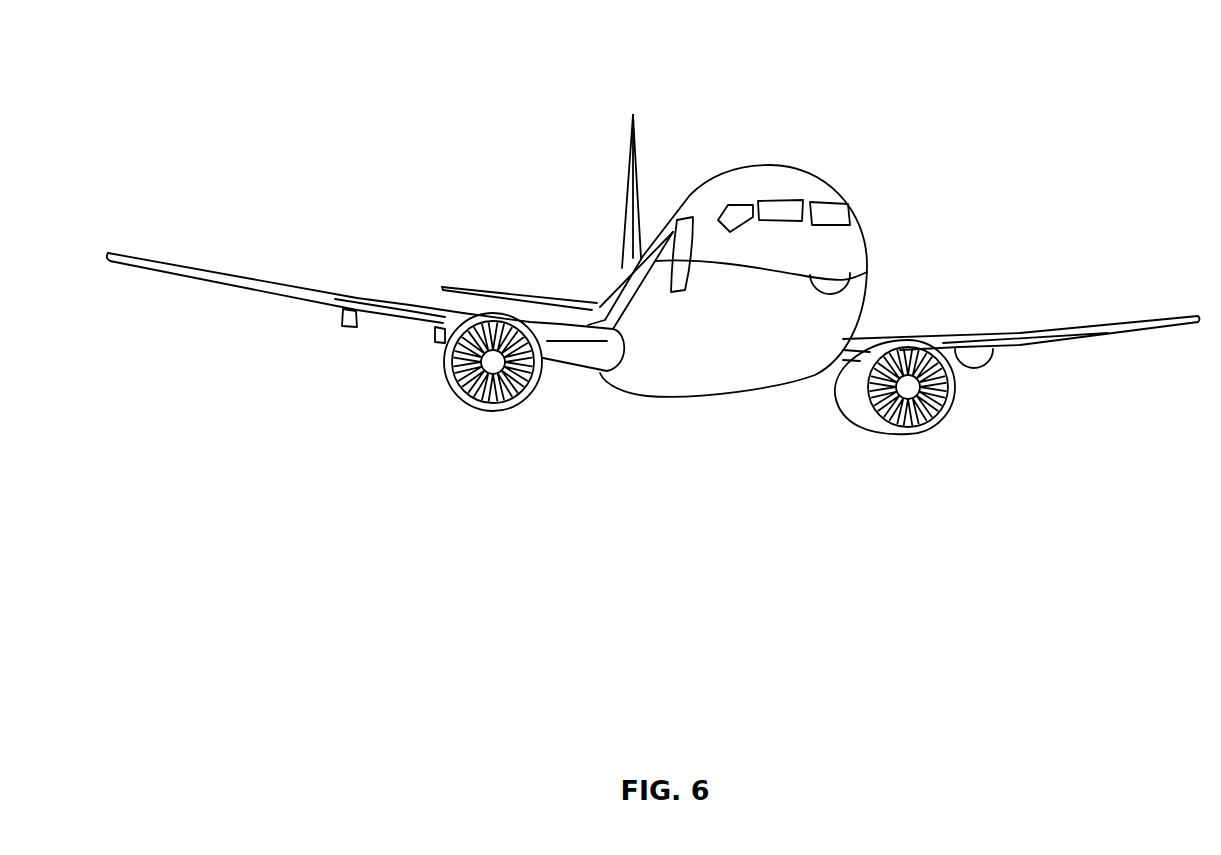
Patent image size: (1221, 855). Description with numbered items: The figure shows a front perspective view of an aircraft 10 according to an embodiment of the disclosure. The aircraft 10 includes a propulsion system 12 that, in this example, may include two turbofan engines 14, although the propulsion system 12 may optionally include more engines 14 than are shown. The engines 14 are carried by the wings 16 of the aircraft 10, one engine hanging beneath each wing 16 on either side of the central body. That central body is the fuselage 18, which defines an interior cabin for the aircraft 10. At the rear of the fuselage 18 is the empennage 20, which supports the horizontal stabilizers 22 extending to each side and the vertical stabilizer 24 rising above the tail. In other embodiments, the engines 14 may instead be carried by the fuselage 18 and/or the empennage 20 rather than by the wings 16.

The aircraft 10 is at (382, 62).
The propulsion system 12 is at (751, 408).
The turbofan engine 14 is at (487, 410).
The wing 16 is at (253, 278).
The fuselage 18 is at (868, 247).
The empennage 20 is at (622, 268).
The horizontal stabilizer 22 is at (483, 287).
The vertical stabilizer 24 is at (630, 160).